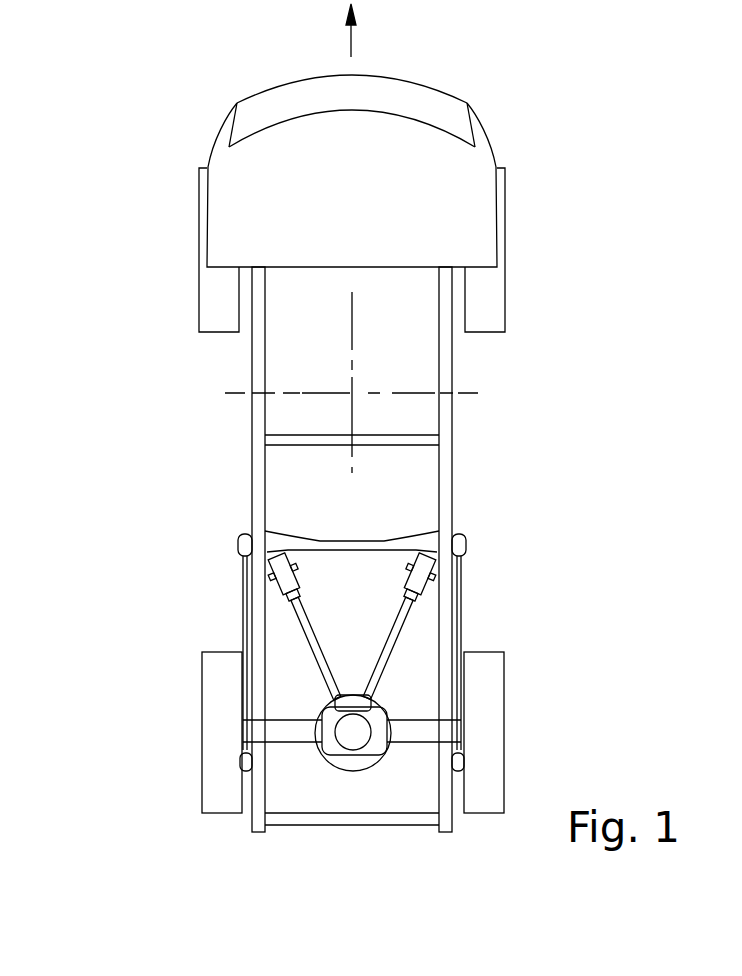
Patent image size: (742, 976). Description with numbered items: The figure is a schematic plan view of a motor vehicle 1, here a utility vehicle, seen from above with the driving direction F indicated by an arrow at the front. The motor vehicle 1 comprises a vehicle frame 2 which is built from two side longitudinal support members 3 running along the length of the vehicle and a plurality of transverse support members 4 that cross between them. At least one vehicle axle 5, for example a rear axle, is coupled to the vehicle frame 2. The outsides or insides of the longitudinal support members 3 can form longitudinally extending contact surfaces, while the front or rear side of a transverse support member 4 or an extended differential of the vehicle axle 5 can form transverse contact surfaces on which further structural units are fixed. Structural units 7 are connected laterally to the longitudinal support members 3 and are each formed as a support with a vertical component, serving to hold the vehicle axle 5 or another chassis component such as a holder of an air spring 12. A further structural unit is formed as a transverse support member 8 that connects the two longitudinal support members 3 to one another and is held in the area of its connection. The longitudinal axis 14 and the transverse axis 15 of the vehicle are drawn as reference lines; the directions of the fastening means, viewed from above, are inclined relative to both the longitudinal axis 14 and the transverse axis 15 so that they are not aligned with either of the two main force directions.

The driving direction F is at (351, 38).
The motor vehicle 1 is at (545, 143).
The vehicle frame 2 is at (460, 425).
The longitudinal support member 3 is at (445, 353).
The transverse support member 4 is at (380, 543).
The vehicle axle 5 is at (408, 730).
The structural unit 7 is at (240, 547).
The transverse support member 8 is at (317, 543).
The air spring 12 is at (243, 758).
The longitudinal axis 14 is at (352, 311).
The transverse axis 15 is at (460, 390).